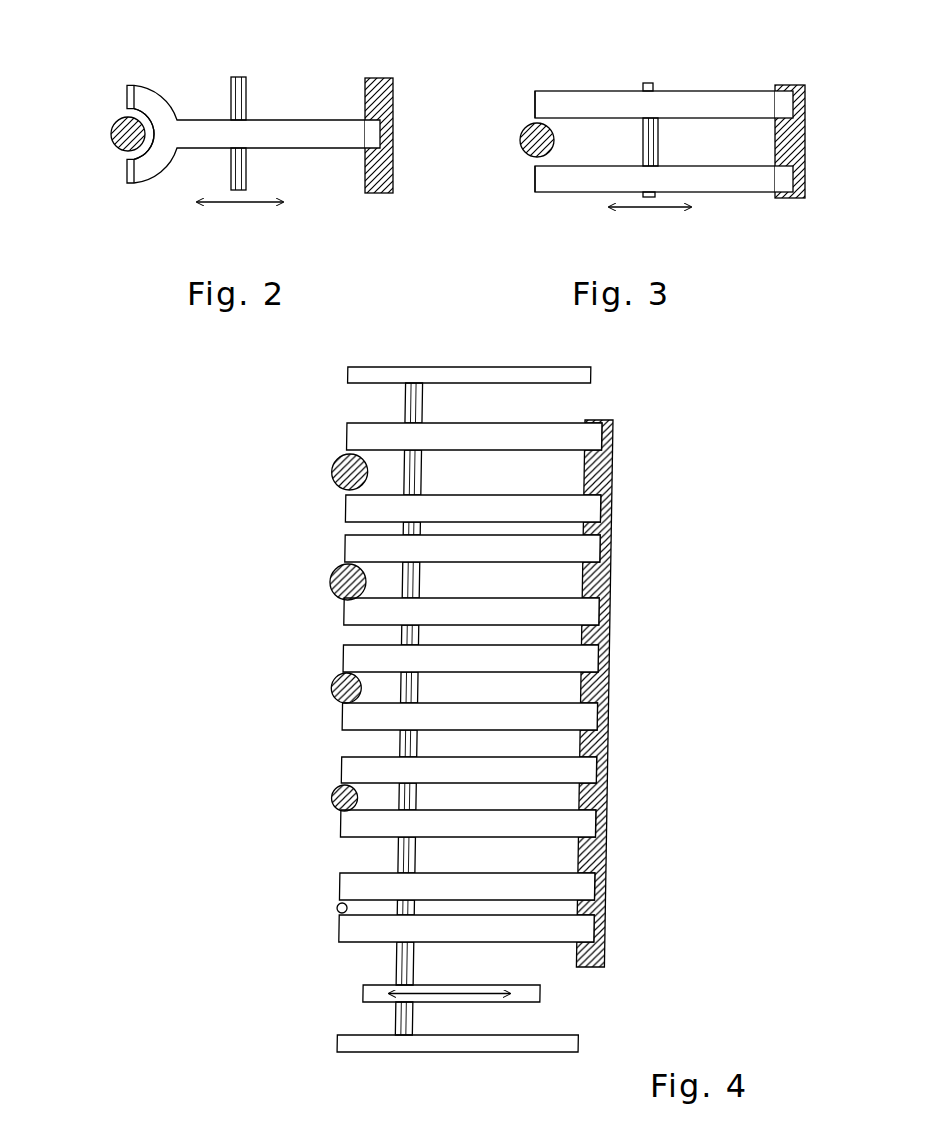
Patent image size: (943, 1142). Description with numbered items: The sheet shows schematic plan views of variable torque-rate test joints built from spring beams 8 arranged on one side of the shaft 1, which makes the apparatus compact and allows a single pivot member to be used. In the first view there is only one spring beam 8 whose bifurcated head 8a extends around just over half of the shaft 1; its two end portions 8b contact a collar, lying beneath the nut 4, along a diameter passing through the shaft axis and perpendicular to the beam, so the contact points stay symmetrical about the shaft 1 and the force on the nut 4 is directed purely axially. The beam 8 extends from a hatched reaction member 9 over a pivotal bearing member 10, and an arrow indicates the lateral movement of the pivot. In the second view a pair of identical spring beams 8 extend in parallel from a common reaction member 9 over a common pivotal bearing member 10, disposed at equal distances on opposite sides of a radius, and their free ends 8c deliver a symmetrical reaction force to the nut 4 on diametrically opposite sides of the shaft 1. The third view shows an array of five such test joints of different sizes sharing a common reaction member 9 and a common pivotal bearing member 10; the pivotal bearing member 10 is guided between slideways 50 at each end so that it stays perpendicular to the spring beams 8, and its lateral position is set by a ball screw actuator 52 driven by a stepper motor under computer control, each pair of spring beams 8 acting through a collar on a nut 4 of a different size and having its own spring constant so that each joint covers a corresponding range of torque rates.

In FIG. 2, the shaft 1 is at (118, 153).
In FIG. 3, the shaft 1 is at (527, 157).
In FIG. 2, the nut 4 is at (99, 105).
In FIG. 3, the nut 4 is at (513, 100).
In FIG. 2, the spring beam 8 is at (273, 133).
In FIG. 3, the spring beam 8 is at (693, 105).
In FIG. 4, the spring beam 8 is at (513, 440).
In FIG. 2, the bifurcated head 8a is at (157, 107).
In FIG. 2, the end portions 8b is at (133, 88).
In FIG. 3, the free ends 8c is at (537, 97).
In FIG. 2, the reaction member 9 is at (390, 80).
In FIG. 3, the reaction member 9 is at (800, 87).
In FIG. 4, the reaction member 9 is at (610, 465).
In FIG. 2, the pivotal bearing member 10 is at (248, 83).
In FIG. 3, the pivotal bearing member 10 is at (655, 88).
In FIG. 4, the pivotal bearing member 10 is at (403, 412).
In FIG. 4, the slideways 50 is at (552, 374).
In FIG. 4, the ball screw actuator 52 is at (363, 988).